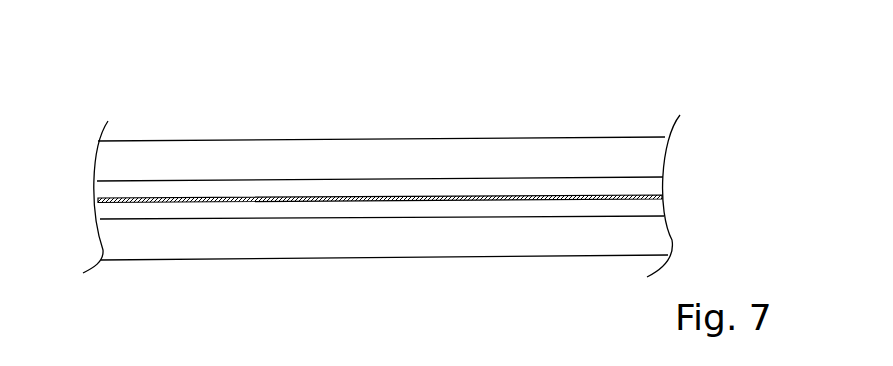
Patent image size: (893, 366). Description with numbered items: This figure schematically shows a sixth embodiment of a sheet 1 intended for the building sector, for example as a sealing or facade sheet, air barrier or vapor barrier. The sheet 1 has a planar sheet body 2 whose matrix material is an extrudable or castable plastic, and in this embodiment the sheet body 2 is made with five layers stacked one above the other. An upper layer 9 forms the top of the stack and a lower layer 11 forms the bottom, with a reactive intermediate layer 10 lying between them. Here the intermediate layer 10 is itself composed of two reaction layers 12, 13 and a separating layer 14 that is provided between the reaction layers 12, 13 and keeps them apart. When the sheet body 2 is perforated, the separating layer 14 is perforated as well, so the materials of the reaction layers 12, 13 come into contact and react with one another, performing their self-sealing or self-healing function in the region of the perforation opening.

The sheet 1 is at (578, 108).
The sheet body 2 is at (500, 153).
The upper layer 9 is at (213, 178).
The intermediate layer 10 is at (88, 201).
The lower layer 11 is at (212, 238).
The reaction layer 12 is at (652, 186).
The reaction layer 13 is at (652, 207).
The separating layer 14 is at (663, 199).